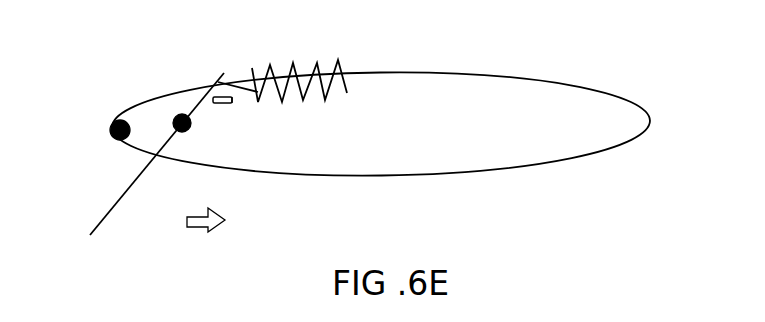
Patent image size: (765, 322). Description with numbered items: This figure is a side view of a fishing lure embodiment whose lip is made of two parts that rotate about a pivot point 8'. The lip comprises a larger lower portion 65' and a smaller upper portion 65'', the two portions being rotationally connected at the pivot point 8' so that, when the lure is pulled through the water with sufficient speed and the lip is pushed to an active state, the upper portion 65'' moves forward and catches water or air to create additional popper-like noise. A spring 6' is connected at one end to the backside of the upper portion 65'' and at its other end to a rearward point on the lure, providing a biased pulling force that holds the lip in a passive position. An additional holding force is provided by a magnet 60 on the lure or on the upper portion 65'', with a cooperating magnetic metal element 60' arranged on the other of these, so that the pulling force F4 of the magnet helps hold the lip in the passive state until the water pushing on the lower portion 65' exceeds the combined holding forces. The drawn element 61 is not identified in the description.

The spring 6' is at (299, 53).
The pivot point 8' is at (149, 104).
The magnet 60 is at (232, 152).
The magnetic metal element 60' is at (287, 150).
The anchor point 61 is at (110, 129).
The lower portion of the lip 65' is at (157, 165).
The upper portion of the lip 65'' is at (190, 72).
The pulling force of the magnet F4 is at (214, 85).